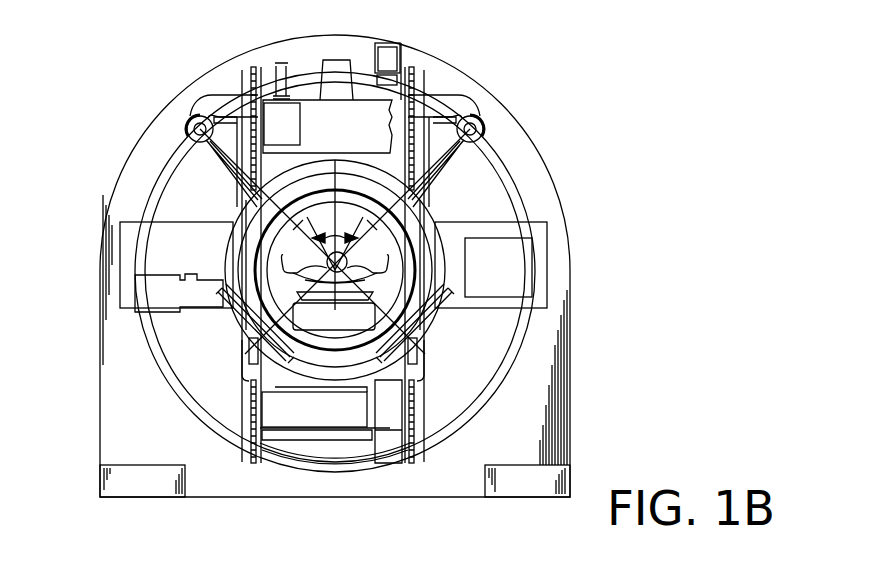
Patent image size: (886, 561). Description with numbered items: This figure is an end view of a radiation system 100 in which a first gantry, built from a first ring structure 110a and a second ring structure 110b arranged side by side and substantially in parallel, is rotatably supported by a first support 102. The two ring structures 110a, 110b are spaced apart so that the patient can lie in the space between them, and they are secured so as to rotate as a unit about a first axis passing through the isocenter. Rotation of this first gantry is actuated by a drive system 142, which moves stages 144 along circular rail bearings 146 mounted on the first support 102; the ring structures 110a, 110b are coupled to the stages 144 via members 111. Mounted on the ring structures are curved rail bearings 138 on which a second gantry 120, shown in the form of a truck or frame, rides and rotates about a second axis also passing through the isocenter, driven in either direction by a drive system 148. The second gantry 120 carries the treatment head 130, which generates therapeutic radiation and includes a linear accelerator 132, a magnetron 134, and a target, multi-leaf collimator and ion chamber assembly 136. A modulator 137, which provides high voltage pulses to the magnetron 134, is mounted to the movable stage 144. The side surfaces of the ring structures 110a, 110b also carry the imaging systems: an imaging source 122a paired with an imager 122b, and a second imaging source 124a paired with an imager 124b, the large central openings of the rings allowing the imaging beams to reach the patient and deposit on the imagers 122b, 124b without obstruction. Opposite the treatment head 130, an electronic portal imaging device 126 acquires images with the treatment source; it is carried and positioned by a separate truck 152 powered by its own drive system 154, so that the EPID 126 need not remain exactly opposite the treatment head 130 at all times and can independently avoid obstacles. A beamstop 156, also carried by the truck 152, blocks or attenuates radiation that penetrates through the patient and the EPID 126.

The radiation system 100 is at (54, 364).
The first support 102 is at (114, 178).
The first ring structure 110a is at (240, 93).
The second ring structure 110b is at (426, 74).
The members 111 is at (242, 192).
The second gantry 120 is at (322, 160).
The imaging source 122a is at (195, 125).
The imager 122b is at (397, 344).
The imaging source 124a is at (472, 129).
The imager 124b is at (280, 350).
The electronic portal imaging device (EPID) 126 is at (298, 387).
The treatment head 130 is at (324, 83).
The linear accelerator (LINAC) 132 is at (349, 96).
The magnetron 134 is at (294, 134).
The target, multi-leaf collimator (MLC) and ion chamber assembly 136 is at (356, 139).
The modulator 137 is at (514, 275).
The curved rail bearings 138 is at (250, 88).
The drive system 142 is at (177, 304).
The stages 144 is at (179, 256).
The circular rail bearings 146 is at (188, 140).
The drive system 148 is at (388, 71).
The truck 152 is at (290, 429).
The drive system 154 is at (388, 456).
The beamstop 156 is at (354, 424).